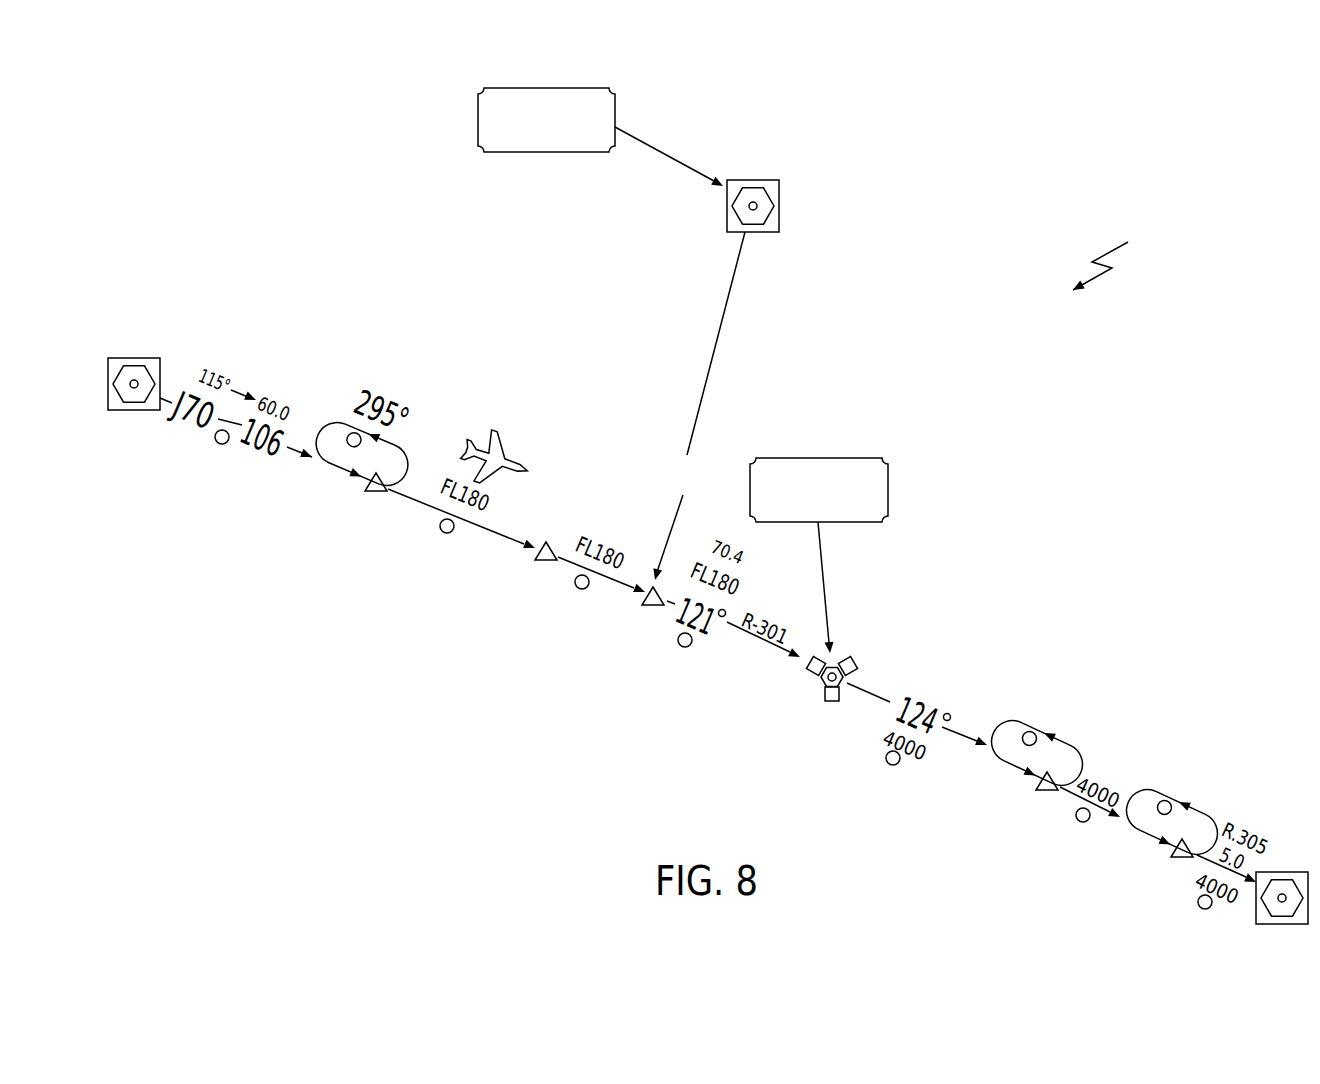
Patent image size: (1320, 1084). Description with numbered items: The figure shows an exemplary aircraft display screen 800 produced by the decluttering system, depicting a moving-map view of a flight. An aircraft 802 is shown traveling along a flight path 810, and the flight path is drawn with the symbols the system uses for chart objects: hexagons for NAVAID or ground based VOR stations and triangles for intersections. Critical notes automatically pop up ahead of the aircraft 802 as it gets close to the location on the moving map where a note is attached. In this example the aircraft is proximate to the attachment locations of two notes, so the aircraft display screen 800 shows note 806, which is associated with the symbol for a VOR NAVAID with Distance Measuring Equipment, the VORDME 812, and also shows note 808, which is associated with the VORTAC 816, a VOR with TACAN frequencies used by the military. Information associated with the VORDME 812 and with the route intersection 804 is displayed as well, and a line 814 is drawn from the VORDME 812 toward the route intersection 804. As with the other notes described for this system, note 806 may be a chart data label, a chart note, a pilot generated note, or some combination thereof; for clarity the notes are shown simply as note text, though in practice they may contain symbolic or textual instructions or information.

The aircraft display screen 800 is at (1124, 260).
The aircraft 802 is at (533, 440).
The route intersection 804 is at (651, 606).
The note 806 is at (478, 121).
The note 808 is at (888, 490).
The flight path 810 is at (196, 432).
The VORDME 812 is at (778, 206).
The radial line 814 is at (733, 302).
The VORTAC 816 is at (830, 702).